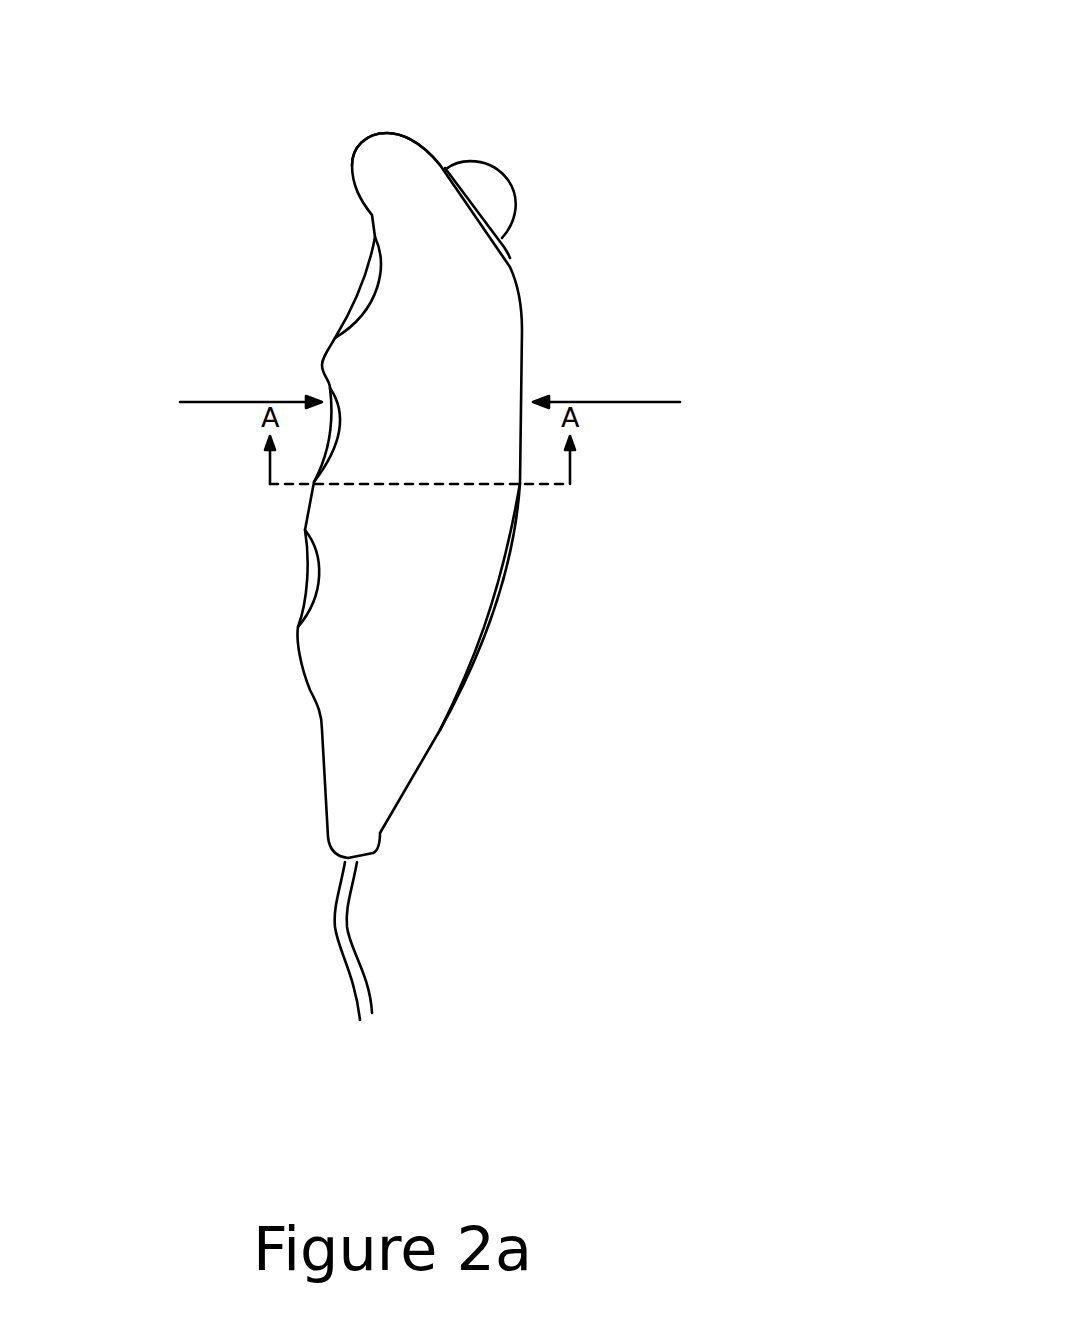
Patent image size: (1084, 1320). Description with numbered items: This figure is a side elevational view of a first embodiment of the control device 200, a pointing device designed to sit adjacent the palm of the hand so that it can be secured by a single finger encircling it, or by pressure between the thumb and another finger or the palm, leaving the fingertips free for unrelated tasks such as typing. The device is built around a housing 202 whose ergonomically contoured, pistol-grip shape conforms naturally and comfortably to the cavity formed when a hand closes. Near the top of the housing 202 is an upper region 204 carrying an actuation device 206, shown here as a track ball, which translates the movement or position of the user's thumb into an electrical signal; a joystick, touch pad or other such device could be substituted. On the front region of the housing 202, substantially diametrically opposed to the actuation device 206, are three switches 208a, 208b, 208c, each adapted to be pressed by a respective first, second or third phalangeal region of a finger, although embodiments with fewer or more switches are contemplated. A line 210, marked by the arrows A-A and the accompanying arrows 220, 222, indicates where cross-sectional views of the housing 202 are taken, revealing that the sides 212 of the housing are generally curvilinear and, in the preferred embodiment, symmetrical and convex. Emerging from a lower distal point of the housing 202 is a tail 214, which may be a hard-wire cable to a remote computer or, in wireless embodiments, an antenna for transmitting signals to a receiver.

The control device 200 is at (647, 128).
The housing 202 is at (510, 320).
The upper region 204 is at (387, 110).
The actuation device 206 is at (500, 188).
The switch 208a is at (366, 288).
The switch 208b is at (338, 428).
The switch 208c is at (316, 582).
The line 210 is at (497, 485).
The sides 212 is at (420, 625).
The tail 214 is at (342, 915).
The left side direction arrow 220 is at (224, 402).
The right side direction arrow 222 is at (634, 402).